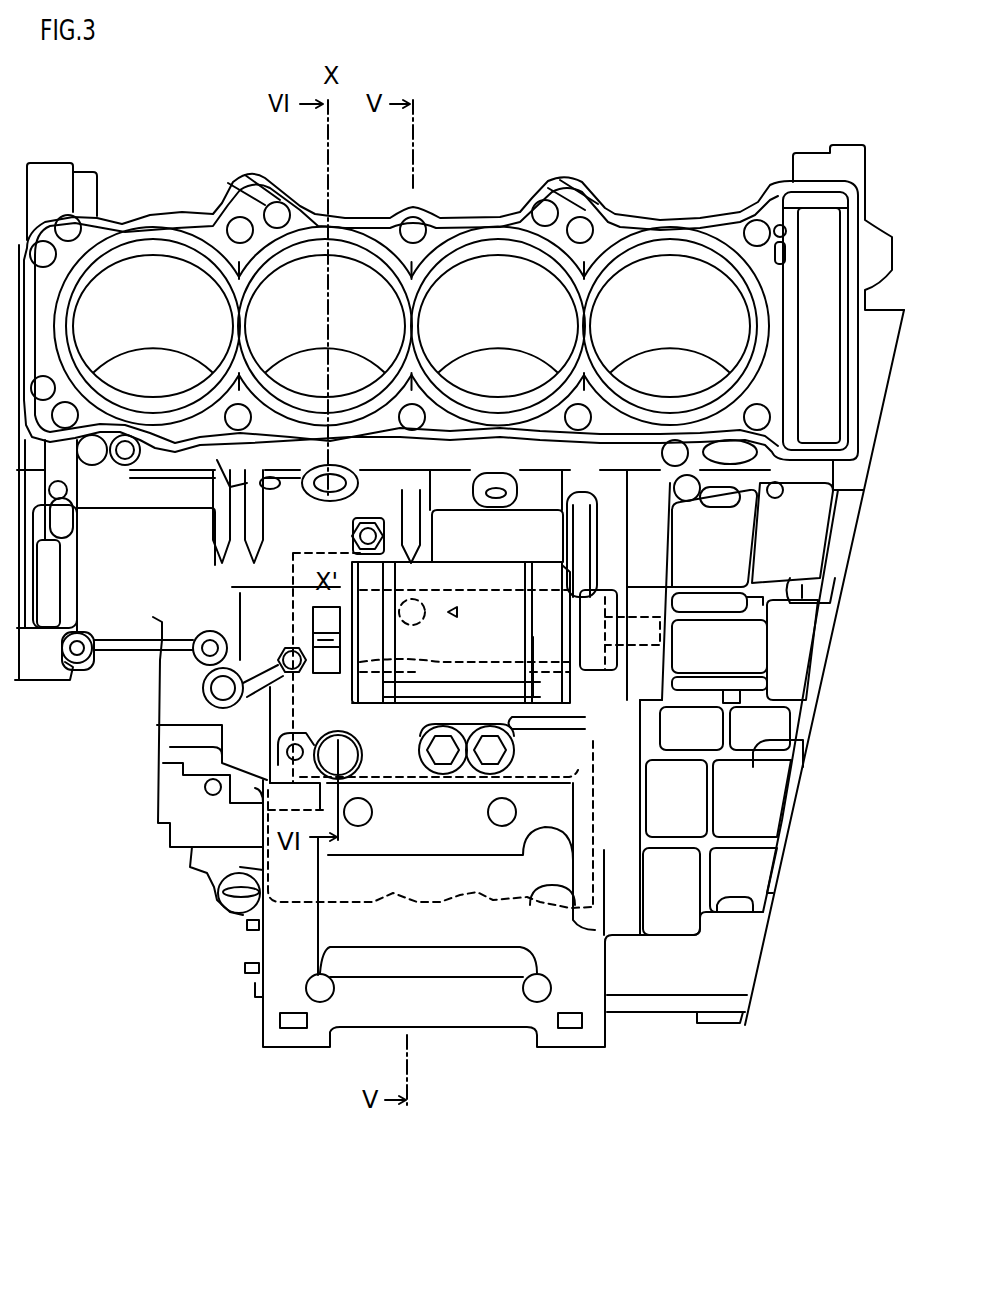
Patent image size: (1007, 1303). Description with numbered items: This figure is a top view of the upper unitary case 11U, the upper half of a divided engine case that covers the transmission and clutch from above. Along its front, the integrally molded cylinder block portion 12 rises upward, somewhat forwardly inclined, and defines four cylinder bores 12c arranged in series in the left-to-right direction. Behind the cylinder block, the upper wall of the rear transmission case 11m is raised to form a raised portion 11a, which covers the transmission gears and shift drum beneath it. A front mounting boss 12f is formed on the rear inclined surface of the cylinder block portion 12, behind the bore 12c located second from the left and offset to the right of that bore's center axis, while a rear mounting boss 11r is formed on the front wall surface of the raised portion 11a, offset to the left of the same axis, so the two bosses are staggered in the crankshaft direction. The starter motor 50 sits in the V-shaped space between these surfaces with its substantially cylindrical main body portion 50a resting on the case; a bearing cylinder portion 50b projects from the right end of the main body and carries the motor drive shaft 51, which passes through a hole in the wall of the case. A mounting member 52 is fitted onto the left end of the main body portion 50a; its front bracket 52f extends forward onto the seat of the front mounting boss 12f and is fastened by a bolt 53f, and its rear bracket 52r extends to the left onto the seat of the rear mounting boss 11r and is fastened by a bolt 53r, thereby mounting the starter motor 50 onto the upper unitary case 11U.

The upper unitary case 11U is at (495, 171).
The cylinder block portion 12 is at (636, 212).
The cylinder bores 12c is at (160, 339).
The front mounting boss 12f is at (333, 541).
The rear mounting boss 11r is at (293, 643).
The raised portion 11a is at (428, 956).
The rear transmission case 11m is at (502, 935).
The starter motor 50 is at (542, 520).
The main body portion 50a is at (421, 903).
The bearing cylinder portion 50b is at (593, 672).
The motor drive shaft 51 is at (643, 648).
The mounting member 52 is at (373, 690).
The front bracket 52f is at (380, 560).
The rear bracket 52r is at (300, 692).
The bolt 53f is at (370, 518).
The bolt 53r is at (282, 662).